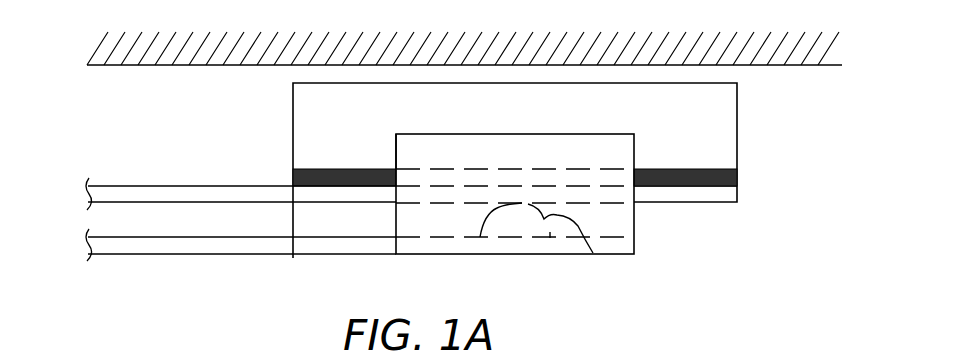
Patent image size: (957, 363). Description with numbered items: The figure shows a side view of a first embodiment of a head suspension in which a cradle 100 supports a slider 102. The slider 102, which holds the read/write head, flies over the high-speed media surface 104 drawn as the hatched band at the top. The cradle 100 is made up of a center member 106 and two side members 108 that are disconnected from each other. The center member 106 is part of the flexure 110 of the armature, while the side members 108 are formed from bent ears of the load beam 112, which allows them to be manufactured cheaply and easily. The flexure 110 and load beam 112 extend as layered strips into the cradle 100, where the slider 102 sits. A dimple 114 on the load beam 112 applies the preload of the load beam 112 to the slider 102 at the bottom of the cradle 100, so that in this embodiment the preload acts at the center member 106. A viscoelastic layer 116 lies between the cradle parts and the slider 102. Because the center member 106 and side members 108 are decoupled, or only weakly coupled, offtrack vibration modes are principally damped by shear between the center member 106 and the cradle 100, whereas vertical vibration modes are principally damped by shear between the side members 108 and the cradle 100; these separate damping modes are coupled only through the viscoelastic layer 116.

The cradle 100 is at (459, 165).
The slider 102 is at (737, 133).
The media surface 104 is at (223, 66).
The center member 106 is at (603, 203).
The side members 108 is at (396, 153).
The flexure 110 is at (122, 203).
The load beam 112 is at (293, 257).
The dimple 114 is at (593, 253).
The viscoelastic layer 116 is at (737, 173).